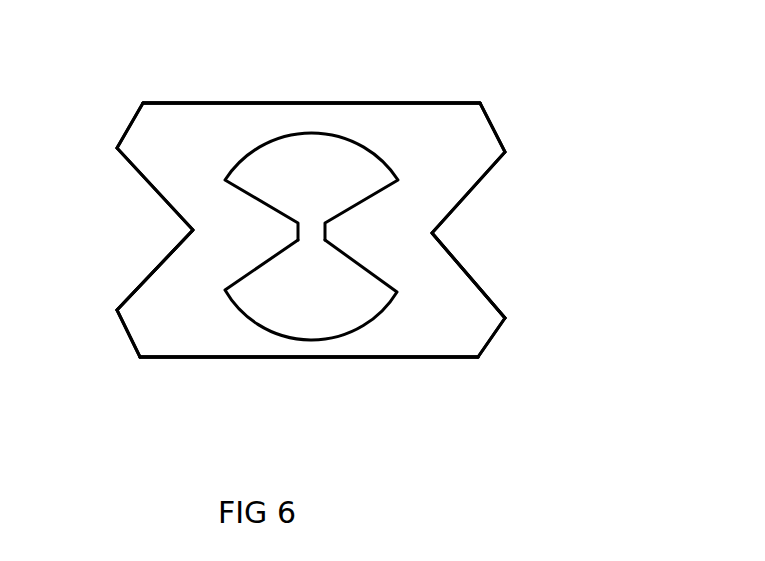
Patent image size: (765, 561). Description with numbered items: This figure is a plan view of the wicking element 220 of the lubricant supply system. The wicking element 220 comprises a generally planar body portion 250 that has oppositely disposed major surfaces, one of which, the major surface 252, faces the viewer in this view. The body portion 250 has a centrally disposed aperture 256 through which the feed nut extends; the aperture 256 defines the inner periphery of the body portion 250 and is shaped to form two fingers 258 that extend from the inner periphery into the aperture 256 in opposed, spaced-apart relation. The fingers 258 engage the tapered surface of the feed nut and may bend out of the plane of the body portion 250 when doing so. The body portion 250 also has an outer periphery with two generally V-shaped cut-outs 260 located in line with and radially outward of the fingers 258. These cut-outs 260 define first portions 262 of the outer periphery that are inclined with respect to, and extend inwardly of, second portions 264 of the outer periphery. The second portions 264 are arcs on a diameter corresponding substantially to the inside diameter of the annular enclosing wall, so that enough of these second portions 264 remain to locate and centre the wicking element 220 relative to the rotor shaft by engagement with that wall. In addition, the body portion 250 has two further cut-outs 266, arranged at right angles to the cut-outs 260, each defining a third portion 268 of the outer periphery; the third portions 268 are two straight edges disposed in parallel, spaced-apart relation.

The wicking element 220 is at (578, 44).
The body portion 250 is at (455, 124).
The major surface 252 is at (452, 340).
The aperture 256 is at (336, 139).
The fingers 258 is at (341, 246).
The cut-outs 260 is at (117, 228).
The first portions of the outer periphery 262 is at (130, 290).
The second portions of the outer periphery 264 is at (133, 113).
The further cut-out 266 is at (300, 92).
The third portion of the outer periphery 268 is at (223, 103).